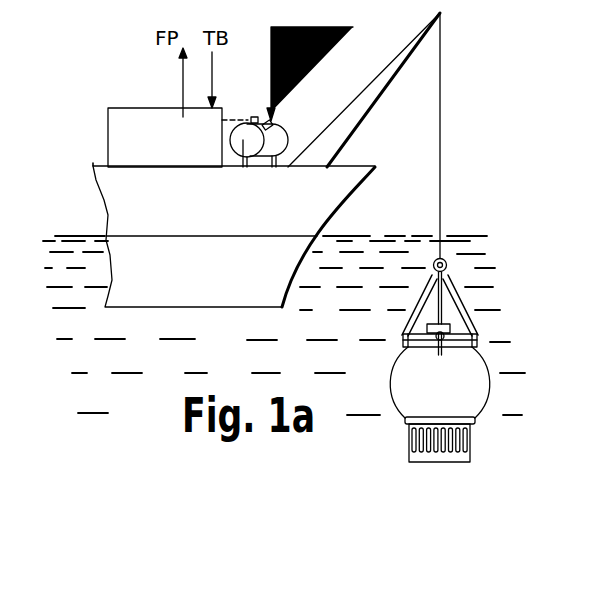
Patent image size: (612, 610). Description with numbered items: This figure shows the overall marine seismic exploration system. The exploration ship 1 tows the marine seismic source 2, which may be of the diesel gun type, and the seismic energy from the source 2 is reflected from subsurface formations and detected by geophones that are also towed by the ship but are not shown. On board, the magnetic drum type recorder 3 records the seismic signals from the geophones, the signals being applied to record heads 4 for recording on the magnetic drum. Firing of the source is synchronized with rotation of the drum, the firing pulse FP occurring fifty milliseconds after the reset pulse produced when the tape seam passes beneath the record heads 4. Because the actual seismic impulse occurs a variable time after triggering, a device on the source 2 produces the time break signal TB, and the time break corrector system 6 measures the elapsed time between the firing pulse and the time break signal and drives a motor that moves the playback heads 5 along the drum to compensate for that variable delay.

The exploration ship 1 is at (218, 295).
The seismic source 2 is at (394, 377).
The magnetic drum type recorder 3 is at (279, 139).
The record heads 4 is at (271, 121).
The playback heads 5 is at (252, 117).
The time break corrector system 6 is at (128, 112).